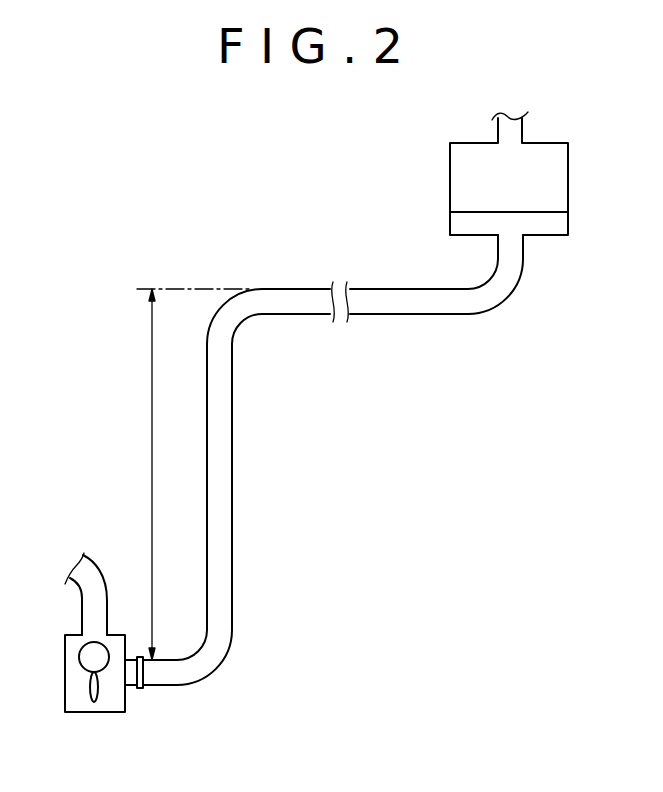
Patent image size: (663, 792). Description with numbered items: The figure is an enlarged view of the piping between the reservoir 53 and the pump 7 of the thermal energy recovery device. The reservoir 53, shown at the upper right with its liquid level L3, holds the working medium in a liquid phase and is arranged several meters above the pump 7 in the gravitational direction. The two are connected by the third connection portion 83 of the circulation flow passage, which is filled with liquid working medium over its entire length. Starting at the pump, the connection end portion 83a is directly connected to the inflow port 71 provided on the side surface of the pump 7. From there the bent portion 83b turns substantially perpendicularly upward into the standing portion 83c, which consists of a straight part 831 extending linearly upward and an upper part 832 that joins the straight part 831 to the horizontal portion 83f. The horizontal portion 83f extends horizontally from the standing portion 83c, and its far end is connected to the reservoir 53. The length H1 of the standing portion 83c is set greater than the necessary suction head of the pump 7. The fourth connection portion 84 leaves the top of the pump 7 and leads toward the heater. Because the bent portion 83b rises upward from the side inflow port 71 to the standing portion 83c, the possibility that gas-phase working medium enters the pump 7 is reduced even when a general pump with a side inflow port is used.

The reservoir 53 is at (538, 173).
The liquid level L3 is at (558, 208).
The third connection portion 83 is at (330, 472).
The horizontal portion 83f is at (290, 314).
The upper part 832 is at (221, 308).
The straight part 831 is at (255, 487).
The standing portion 83c is at (217, 497).
The bent portion 83b is at (213, 653).
The connection end portion 83a is at (163, 678).
The length of the standing portion H1 is at (183, 474).
The pump 7 is at (81, 701).
The inflow port 71 is at (124, 676).
The fourth connection portion 84 is at (78, 588).